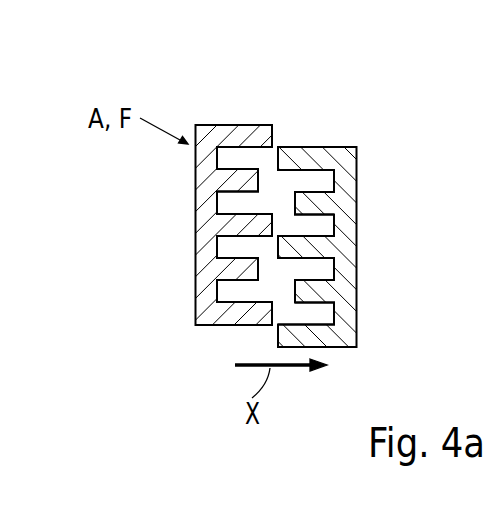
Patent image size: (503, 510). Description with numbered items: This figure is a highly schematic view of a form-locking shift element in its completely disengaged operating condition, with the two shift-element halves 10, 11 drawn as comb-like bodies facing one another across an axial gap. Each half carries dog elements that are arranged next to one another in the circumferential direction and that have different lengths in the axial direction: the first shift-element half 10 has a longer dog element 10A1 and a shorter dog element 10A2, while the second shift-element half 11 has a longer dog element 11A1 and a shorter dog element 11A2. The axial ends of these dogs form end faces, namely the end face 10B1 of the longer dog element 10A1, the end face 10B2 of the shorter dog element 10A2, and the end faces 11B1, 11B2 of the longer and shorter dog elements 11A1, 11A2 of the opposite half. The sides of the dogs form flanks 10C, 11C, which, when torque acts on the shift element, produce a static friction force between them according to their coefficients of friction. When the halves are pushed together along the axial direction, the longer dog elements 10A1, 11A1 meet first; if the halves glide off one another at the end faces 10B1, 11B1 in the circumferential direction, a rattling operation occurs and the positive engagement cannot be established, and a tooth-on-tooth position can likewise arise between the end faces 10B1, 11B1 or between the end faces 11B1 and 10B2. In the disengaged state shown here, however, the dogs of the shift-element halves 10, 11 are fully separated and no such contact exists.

The shift-element half 10 is at (200, 116).
The longer dog element 10A1 is at (223, 315).
The shorter dog element 10A2 is at (232, 180).
The end face of the dog element 10B1 is at (272, 226).
The end face of the dog element 10B2 is at (258, 270).
The flank of the dog element 10C is at (256, 302).
The shift-element half 11 is at (350, 138).
The longer dog element 11A1 is at (298, 155).
The shorter dog element 11A2 is at (313, 200).
The end face of the dog element 11B1 is at (278, 245).
The end face of the dog element 11B2 is at (295, 205).
The flank of the dog element 11C is at (310, 323).